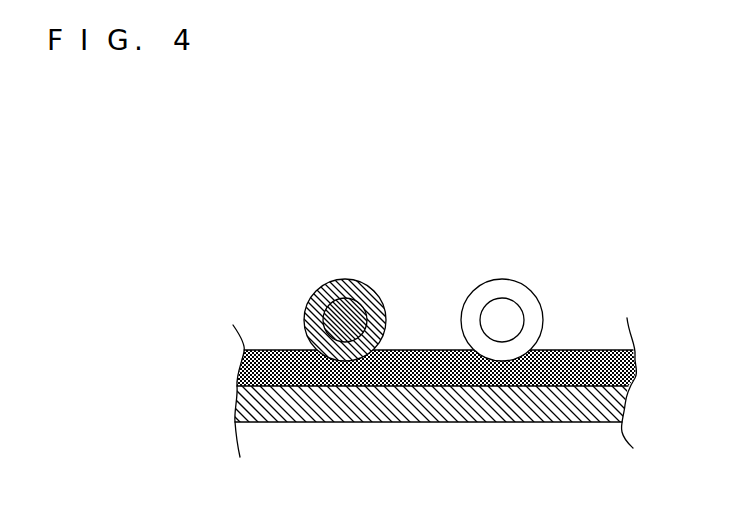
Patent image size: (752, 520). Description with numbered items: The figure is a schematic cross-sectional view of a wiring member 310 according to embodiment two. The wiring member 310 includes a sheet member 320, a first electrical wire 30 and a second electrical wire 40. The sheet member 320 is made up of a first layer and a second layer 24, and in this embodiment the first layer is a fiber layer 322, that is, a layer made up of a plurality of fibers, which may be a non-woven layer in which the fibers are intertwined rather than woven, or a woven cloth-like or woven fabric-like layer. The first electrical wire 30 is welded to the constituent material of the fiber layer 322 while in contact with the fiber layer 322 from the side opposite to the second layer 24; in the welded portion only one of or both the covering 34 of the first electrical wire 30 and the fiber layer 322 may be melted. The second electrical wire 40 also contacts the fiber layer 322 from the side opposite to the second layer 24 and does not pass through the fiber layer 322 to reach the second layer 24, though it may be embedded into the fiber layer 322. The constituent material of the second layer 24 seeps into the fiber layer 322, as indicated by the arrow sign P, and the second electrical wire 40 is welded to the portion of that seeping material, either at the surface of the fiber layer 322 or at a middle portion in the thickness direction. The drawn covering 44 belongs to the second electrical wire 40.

The wiring member 310 is at (515, 228).
The sheet member 320 is at (590, 352).
The fiber layer 322 is at (603, 352).
The second layer 24 is at (603, 423).
The first electrical wire 30 is at (319, 288).
The covering 34 is at (377, 300).
The second electrical wire 40 is at (525, 286).
The insulating coating of second electric wire 44 is at (541, 308).
The arrow sign P is at (324, 388).